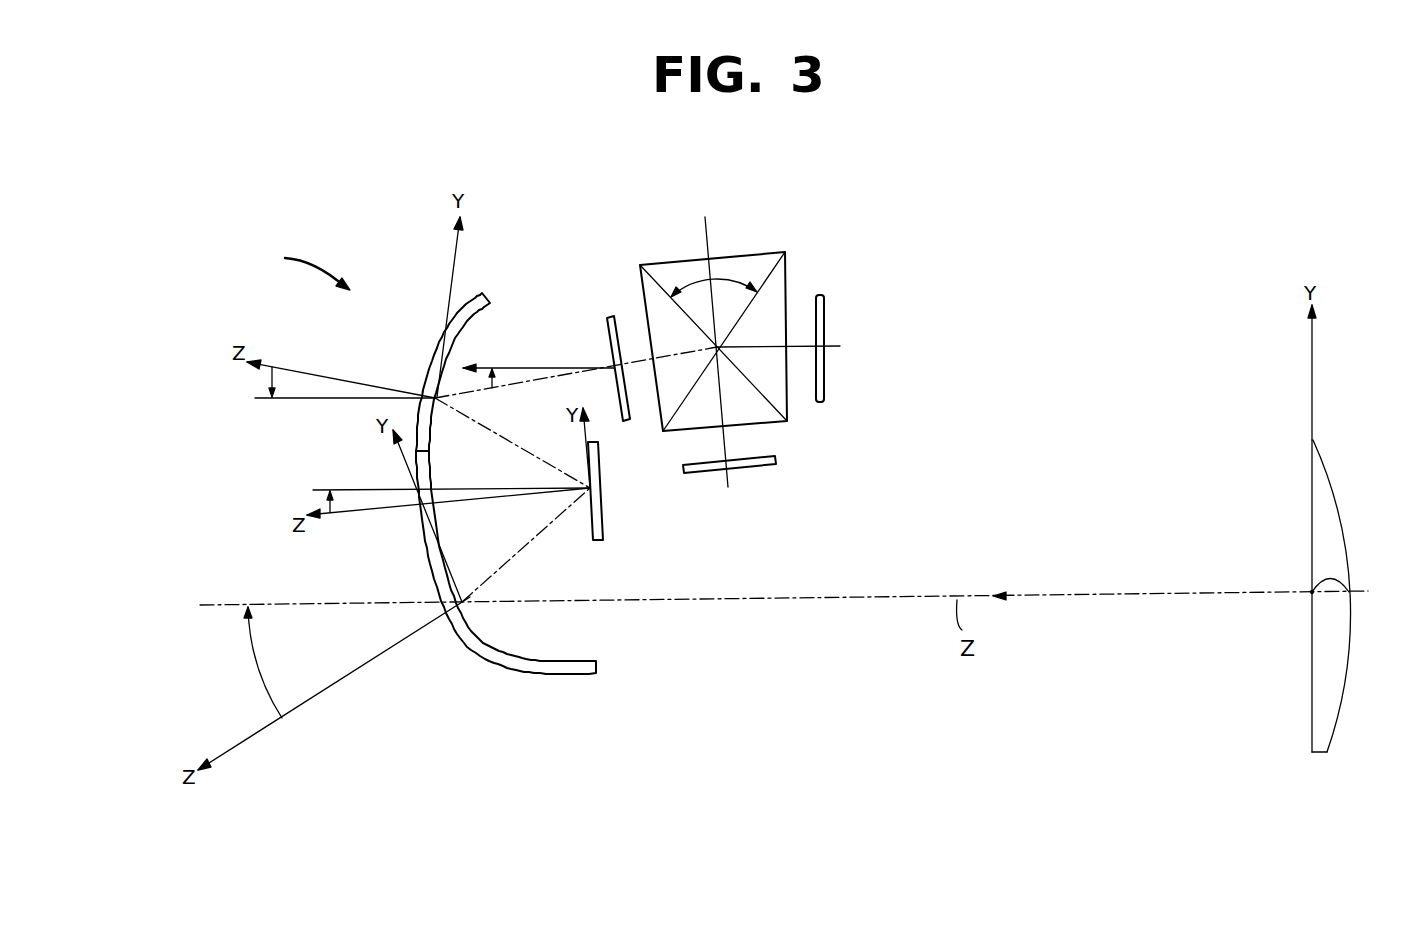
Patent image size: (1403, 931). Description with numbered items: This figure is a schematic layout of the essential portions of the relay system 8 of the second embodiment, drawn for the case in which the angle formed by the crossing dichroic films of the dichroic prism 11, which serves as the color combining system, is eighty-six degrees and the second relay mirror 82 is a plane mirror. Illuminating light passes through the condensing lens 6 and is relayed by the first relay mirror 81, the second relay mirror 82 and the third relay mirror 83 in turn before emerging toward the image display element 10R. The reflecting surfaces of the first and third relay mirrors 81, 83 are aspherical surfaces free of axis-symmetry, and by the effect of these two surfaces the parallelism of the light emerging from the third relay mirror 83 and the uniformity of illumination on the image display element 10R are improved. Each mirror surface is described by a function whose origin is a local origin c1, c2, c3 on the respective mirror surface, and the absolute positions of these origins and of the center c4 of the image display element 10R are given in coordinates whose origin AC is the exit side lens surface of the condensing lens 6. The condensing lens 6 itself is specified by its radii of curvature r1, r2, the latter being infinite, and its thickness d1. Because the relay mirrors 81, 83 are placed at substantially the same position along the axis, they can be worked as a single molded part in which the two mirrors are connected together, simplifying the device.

The relay system 8 is at (304, 273).
The first relay mirror 81 is at (568, 680).
The second relay mirror 82 is at (603, 536).
The third relay mirror 83 is at (462, 292).
The image display element 10R is at (611, 315).
The dichroic prism 11 is at (733, 251).
The condensing lens 6 is at (1329, 608).
The local origin of first relay mirror surface c1 is at (467, 598).
The local origin of second relay mirror surface c2 is at (600, 488).
The local origin of third relay mirror surface c3 is at (440, 400).
The center of the image display element c4 is at (613, 366).
The radius of curvature of condensing lens surface r1 is at (1345, 500).
The radius of curvature of condensing lens exit surface r2 is at (1318, 442).
The thickness of condensing lens d1 is at (1348, 578).
The origin of absolute coordinates AC is at (1312, 592).